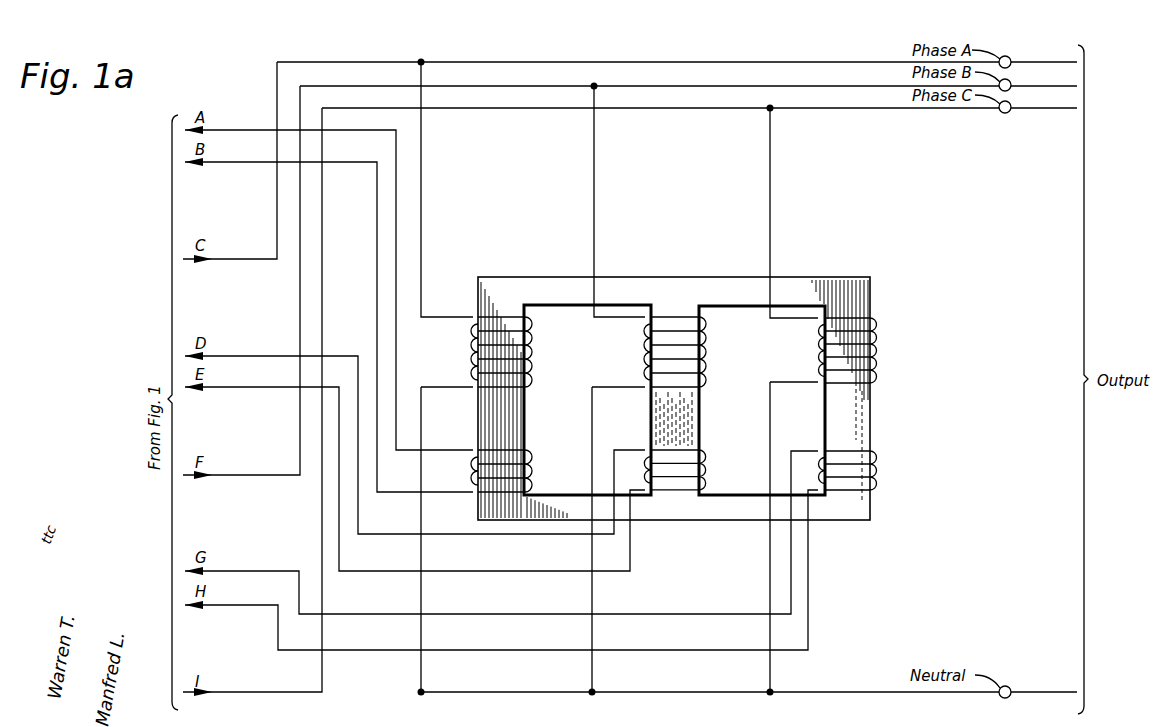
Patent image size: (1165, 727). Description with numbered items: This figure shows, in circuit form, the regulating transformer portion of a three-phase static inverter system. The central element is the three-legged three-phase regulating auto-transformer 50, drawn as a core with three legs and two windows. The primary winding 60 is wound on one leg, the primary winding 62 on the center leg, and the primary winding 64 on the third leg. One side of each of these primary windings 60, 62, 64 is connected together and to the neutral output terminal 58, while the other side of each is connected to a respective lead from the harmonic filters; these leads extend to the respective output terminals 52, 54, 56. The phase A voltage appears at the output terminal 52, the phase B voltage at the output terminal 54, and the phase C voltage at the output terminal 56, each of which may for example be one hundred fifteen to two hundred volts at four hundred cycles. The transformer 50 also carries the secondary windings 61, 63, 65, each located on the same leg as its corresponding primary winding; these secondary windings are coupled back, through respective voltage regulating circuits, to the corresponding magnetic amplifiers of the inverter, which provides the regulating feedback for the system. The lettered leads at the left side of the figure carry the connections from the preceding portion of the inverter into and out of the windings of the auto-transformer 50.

The three-legged three-phase regulating auto-transformer 50 is at (852, 265).
The output terminal 52 is at (1012, 60).
The output terminal 54 is at (1012, 82).
The output terminal 56 is at (1012, 105).
The neutral output terminal 58 is at (1011, 688).
The primary winding 60 is at (470, 349).
The secondary winding 61 is at (533, 458).
The primary winding 62 is at (642, 345).
The secondary winding 63 is at (707, 455).
The primary winding 64 is at (878, 352).
The secondary winding 65 is at (877, 455).